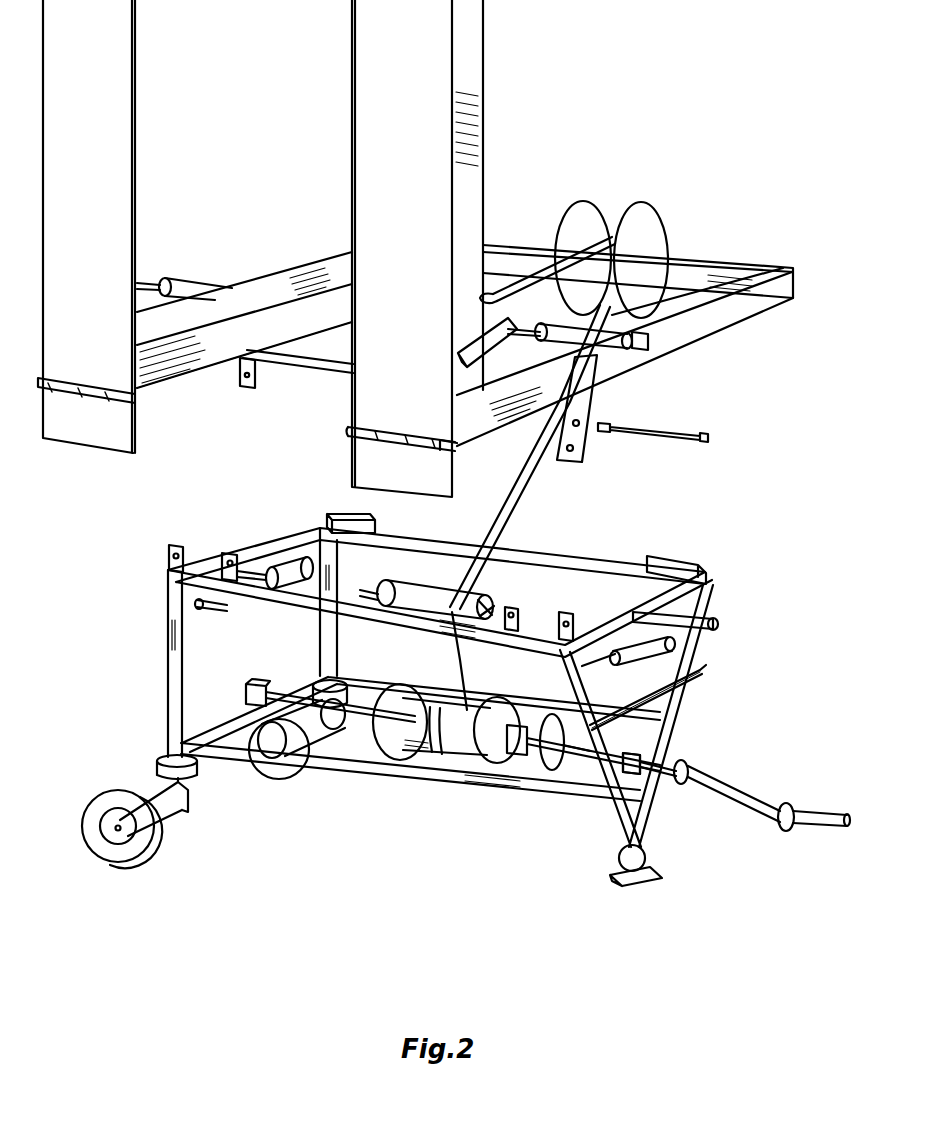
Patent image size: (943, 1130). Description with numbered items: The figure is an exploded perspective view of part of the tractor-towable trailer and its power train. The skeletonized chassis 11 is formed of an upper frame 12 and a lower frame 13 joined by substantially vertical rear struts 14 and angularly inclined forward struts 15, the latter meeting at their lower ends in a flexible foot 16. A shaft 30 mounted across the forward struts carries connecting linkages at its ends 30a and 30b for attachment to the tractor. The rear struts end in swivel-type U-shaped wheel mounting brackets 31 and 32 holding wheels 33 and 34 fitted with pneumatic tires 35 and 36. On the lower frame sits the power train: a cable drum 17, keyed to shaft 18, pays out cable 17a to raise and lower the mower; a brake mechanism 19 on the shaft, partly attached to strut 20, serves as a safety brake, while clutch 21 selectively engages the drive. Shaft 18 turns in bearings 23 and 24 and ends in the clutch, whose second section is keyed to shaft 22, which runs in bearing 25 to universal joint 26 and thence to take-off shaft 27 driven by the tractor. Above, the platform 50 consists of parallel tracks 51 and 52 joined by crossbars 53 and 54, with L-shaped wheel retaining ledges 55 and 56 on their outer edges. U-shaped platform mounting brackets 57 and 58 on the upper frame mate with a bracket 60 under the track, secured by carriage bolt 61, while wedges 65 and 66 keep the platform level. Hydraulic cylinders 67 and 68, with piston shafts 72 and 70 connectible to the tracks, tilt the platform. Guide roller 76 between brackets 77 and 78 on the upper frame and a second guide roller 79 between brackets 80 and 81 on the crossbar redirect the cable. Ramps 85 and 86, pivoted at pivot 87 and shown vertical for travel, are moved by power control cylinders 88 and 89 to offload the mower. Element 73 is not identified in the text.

The chassis 11 is at (466, 694).
The upper frame 12 is at (260, 602).
The lower frame 13 is at (400, 780).
The rear struts 14 is at (340, 570).
The forward struts 15 is at (706, 605).
The flexible foot 16 is at (655, 877).
The cable drum 17 is at (470, 705).
The cable 17a is at (507, 510).
The shaft 18 is at (362, 690).
The brake mechanism 19 is at (515, 705).
The strut 20 is at (525, 770).
The clutch 21 is at (560, 772).
The shaft 22 is at (643, 740).
The bearing 23 is at (258, 680).
The bearing 24 is at (548, 722).
The bearing 25 is at (647, 750).
The universal joint 26 is at (680, 784).
The shaft 27 is at (740, 792).
The shaft 30 is at (626, 702).
The shaft end 30a is at (706, 672).
The shaft end 30b is at (622, 738).
The wheel mounting bracket 31 is at (330, 730).
The wheel mounting bracket 32 is at (188, 803).
The wheel 33 is at (240, 705).
The wheel 34 is at (150, 835).
The pneumatic tire 35 is at (285, 782).
The pneumatic tire 36 is at (100, 868).
The platform 50 is at (633, 325).
The track 51 is at (705, 262).
The track 52 is at (190, 378).
The crossbar 53 is at (720, 253).
The crossbar 54 is at (305, 378).
The wheel retaining ledge 55 is at (775, 262).
The wheel retaining ledge 56 is at (268, 290).
The platform mounting bracket 57 is at (566, 610).
The platform mounting bracket 58 is at (172, 545).
The bracket 60 is at (250, 390).
The carriage bolt 61 is at (670, 428).
The wedge 65 is at (690, 560).
The wedge 66 is at (335, 514).
The hydraulic cylinder 67 is at (280, 568).
The hydraulic cylinder 68 is at (660, 650).
The piston shaft 70 is at (612, 625).
The piston shaft 72 is at (578, 458).
The pin 73 is at (208, 610).
The guide roller 76 is at (432, 575).
The bracket 77 is at (380, 598).
The bracket 78 is at (497, 606).
The guide roller 79 is at (645, 205).
The bracket 80 is at (655, 258).
The bracket 81 is at (560, 245).
The ramp 85 is at (135, 128).
The ramp 86 is at (352, 115).
The pivot 87 is at (140, 398).
The power control cylinder 88 is at (180, 283).
The power control cylinder 89 is at (630, 350).